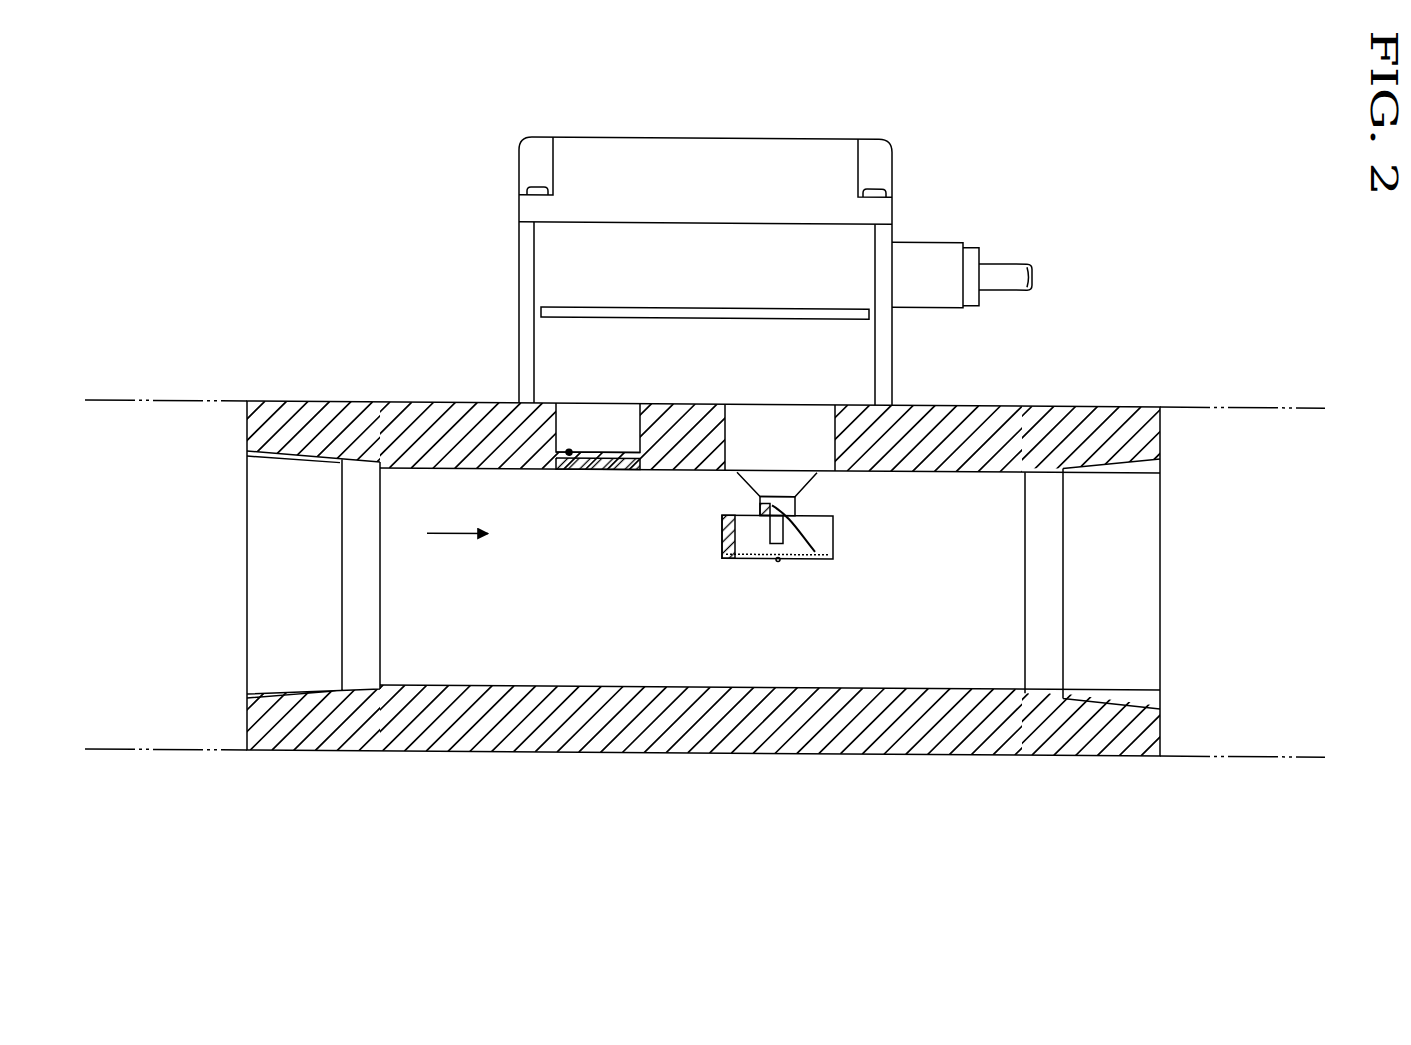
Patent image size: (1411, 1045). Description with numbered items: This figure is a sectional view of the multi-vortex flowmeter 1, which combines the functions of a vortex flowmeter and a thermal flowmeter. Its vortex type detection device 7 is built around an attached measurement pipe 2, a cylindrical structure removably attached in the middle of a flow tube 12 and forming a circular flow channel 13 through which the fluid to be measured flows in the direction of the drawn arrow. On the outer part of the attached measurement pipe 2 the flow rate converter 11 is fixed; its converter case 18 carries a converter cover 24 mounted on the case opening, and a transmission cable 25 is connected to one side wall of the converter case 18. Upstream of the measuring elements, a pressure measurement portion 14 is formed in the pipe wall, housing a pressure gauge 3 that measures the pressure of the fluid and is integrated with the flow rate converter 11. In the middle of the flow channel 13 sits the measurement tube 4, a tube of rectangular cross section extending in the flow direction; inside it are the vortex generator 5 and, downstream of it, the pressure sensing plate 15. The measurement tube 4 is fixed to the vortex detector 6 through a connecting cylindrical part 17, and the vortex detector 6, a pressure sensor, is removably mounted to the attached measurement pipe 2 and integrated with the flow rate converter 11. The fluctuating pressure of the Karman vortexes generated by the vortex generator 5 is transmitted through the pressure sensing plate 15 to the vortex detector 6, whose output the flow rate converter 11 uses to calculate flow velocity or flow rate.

The multi-vortex flowmeter 1 is at (404, 206).
The attached measurement pipe 2 is at (345, 408).
The pressure gauge 3 is at (580, 410).
The measurement tube 4 is at (833, 530).
The vortex generator 5 is at (722, 533).
The vortex detector 6 is at (810, 440).
The vortex type detection device 7 is at (1133, 172).
The flow rate converter 11 is at (897, 183).
The flow tube 12 is at (160, 400).
The flow channel 13 is at (563, 660).
The pressure measurement portion 14 is at (569, 457).
The pressure sensing plate 15 is at (797, 555).
The connecting cylindrical part 17 is at (795, 503).
The converter case 18 is at (552, 265).
The converter cover 24 is at (593, 167).
The transmission cable 25 is at (1005, 270).